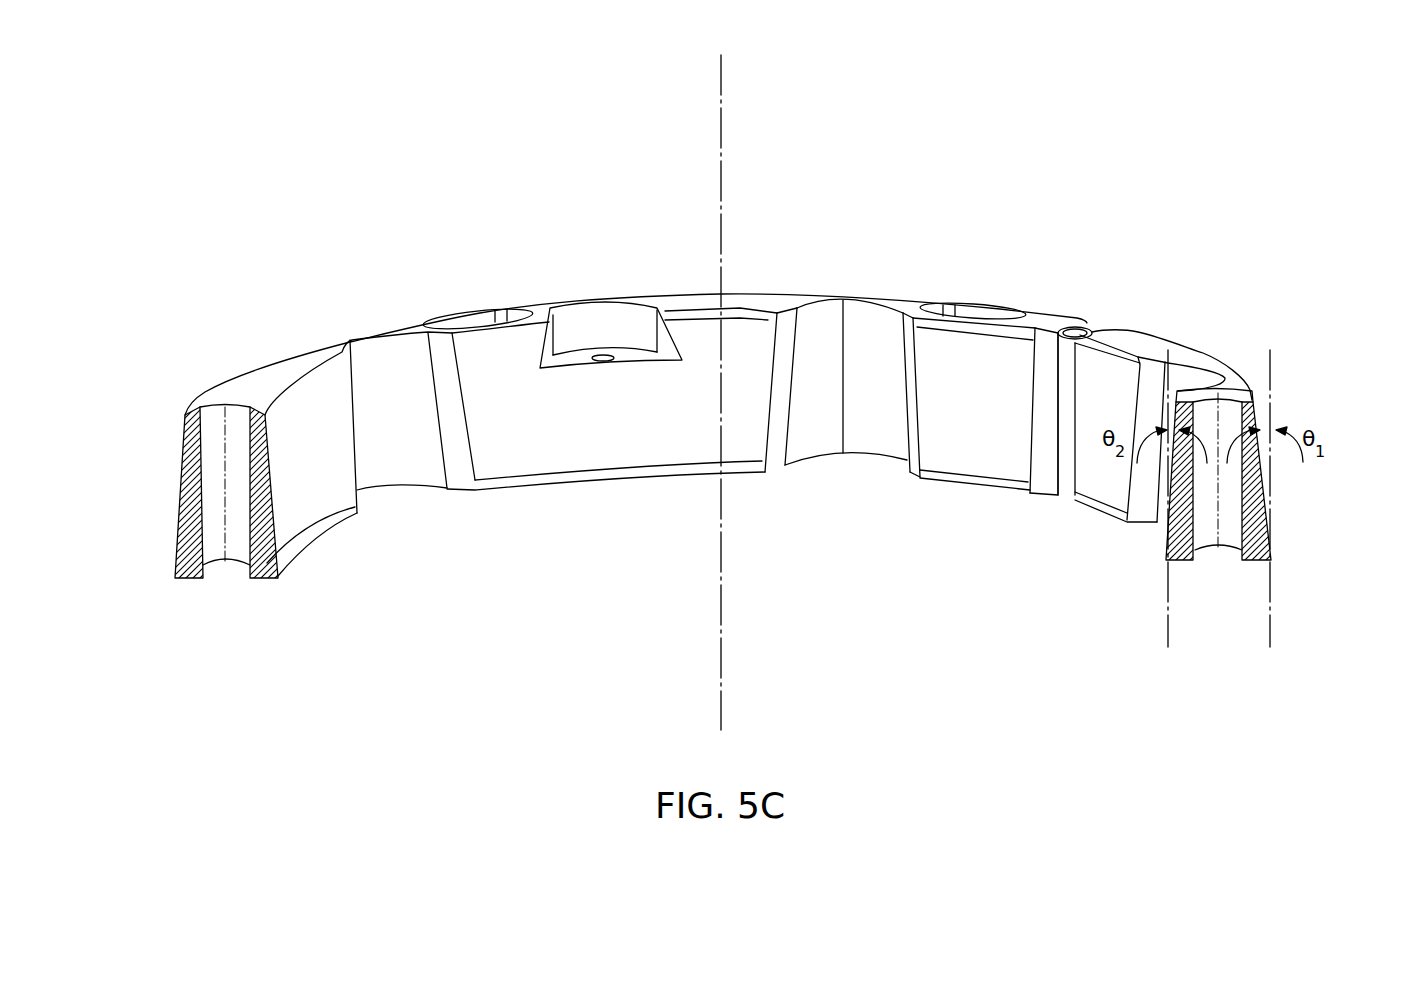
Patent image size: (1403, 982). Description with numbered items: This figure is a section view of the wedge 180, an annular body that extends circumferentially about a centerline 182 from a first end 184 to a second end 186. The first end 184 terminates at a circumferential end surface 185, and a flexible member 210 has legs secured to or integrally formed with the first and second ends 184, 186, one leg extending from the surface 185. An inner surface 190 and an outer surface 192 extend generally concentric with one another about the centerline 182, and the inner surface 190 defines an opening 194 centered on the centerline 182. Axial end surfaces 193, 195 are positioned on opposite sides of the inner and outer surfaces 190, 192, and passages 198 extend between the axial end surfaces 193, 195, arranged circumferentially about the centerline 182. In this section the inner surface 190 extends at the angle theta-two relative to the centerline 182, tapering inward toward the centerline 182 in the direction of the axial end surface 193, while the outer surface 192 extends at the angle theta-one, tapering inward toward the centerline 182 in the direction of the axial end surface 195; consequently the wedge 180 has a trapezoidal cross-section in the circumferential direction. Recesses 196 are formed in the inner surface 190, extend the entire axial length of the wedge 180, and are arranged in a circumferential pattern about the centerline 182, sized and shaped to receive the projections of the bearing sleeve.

The wedge 180 is at (234, 252).
The centerline 182 is at (722, 148).
The first end 184 is at (1088, 298).
The circumferential end surface 185 is at (1040, 342).
The second end 186 is at (1192, 328).
The inner surface 190 is at (628, 443).
The outer surface 192 is at (1273, 521).
The axial end surface 193 is at (523, 487).
The opening 194 is at (301, 413).
The axial end surface 195 is at (675, 300).
The recesses 196 is at (388, 363).
The passages 198 is at (217, 415).
The flexible member 210 is at (1038, 425).